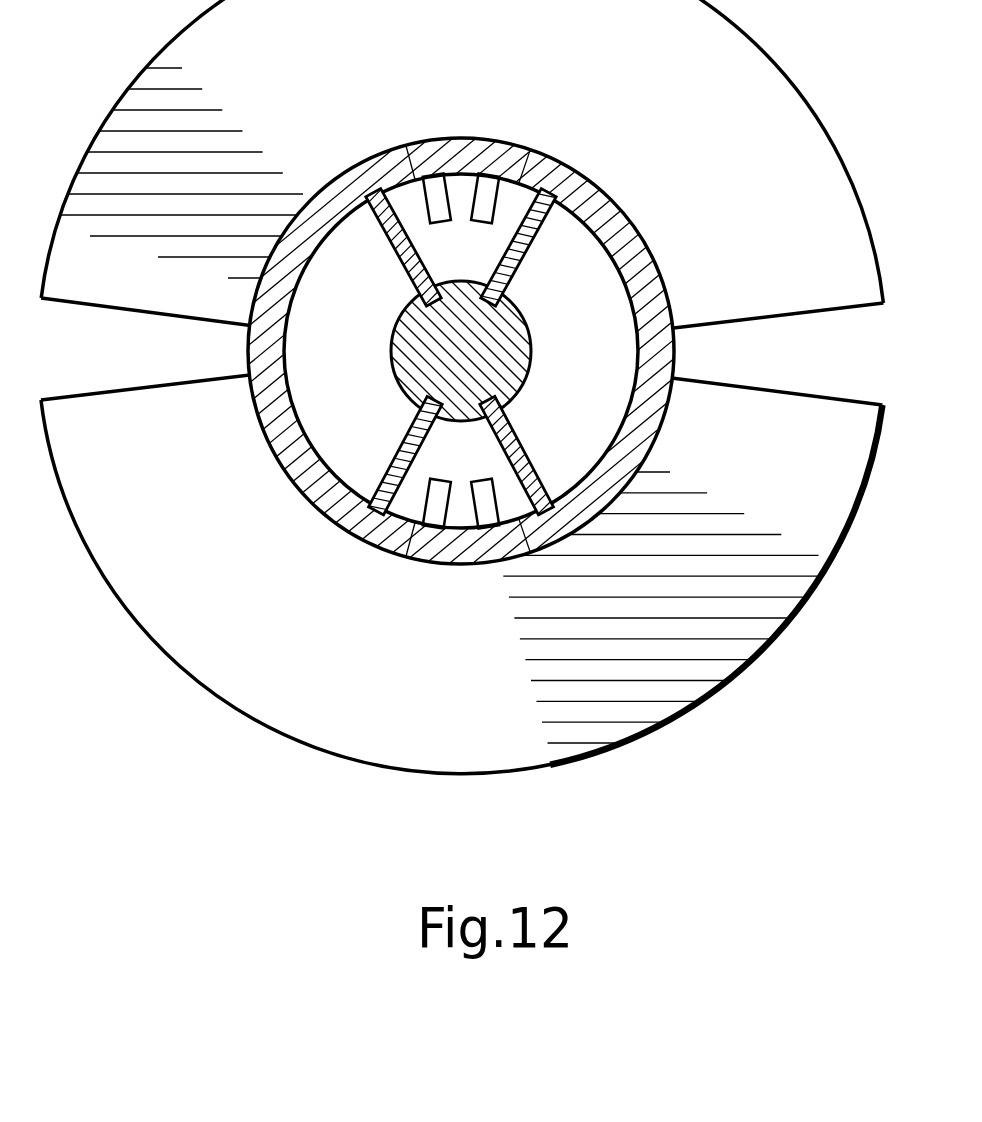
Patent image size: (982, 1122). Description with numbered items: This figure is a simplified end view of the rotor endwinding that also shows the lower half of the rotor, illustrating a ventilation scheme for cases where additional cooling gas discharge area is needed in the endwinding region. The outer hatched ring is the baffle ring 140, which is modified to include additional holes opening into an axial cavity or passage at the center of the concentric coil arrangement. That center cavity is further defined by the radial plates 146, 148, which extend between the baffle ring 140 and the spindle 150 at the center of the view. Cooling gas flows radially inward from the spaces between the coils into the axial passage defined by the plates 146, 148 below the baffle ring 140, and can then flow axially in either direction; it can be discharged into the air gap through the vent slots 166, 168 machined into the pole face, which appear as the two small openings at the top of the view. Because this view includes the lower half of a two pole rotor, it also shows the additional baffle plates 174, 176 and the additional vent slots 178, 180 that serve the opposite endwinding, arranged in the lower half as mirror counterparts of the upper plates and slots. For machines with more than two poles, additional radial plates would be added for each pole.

The baffle ring 140 is at (675, 348).
The radial plate 146 is at (403, 273).
The radial plate 148 is at (513, 277).
The spindle 150 is at (407, 380).
The vent slot 166 is at (441, 198).
The vent slot 168 is at (488, 198).
The baffle plate 174 is at (384, 479).
The baffle plate 176 is at (537, 473).
The vent slot 178 is at (438, 521).
The vent slot 180 is at (486, 528).